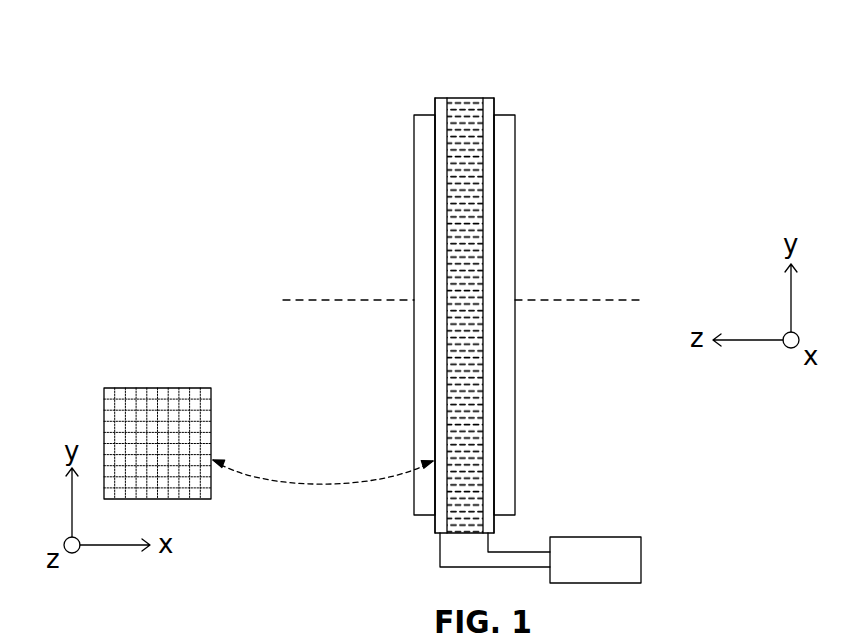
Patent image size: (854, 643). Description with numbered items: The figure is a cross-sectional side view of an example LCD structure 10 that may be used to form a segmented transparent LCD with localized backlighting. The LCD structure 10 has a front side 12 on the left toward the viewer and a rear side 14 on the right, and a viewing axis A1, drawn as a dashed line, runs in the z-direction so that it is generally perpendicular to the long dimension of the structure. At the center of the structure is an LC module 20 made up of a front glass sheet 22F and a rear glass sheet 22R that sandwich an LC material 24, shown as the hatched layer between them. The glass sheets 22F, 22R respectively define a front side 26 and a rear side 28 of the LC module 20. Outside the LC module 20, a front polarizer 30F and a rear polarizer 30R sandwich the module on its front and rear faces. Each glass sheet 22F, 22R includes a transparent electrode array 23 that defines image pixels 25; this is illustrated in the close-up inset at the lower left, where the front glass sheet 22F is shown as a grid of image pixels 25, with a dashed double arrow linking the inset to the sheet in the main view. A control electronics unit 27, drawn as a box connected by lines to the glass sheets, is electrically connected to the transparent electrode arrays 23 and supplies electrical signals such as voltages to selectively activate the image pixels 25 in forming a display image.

The LCD structure 10 is at (277, 72).
The front side 12 is at (292, 181).
The rear side 14 is at (673, 163).
The LC module 20 is at (466, 82).
The front glass sheet 22F is at (442, 98).
The rear glass sheet 22R is at (487, 98).
The front polarizer 30F is at (423, 115).
The rear polarizer 30R is at (505, 115).
The LC material 24 is at (465, 170).
The front side of LC module 26 is at (435, 344).
The rear side of LC module 28 is at (494, 337).
The viewing axis A1 is at (603, 300).
The image pixels 25 is at (147, 398).
The transparent electrode array 23 is at (213, 418).
The control electronics unit 27 is at (609, 574).